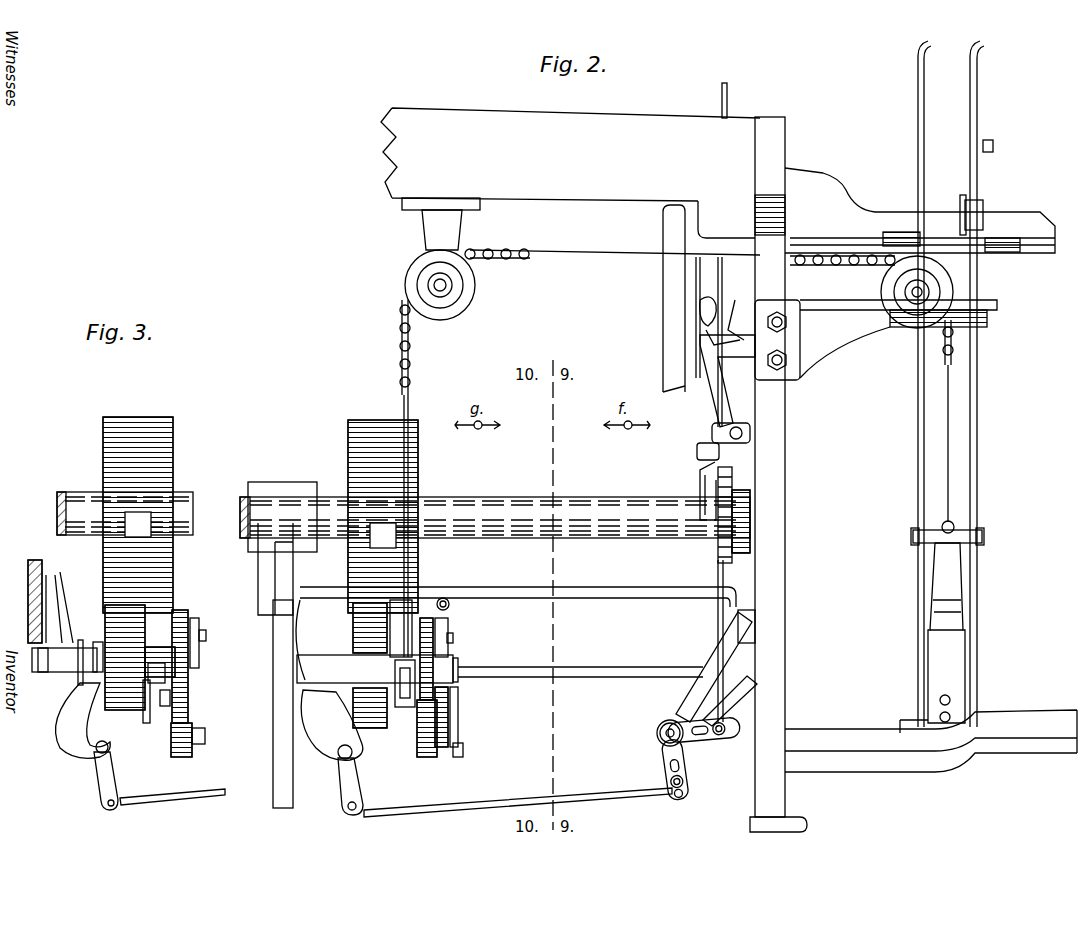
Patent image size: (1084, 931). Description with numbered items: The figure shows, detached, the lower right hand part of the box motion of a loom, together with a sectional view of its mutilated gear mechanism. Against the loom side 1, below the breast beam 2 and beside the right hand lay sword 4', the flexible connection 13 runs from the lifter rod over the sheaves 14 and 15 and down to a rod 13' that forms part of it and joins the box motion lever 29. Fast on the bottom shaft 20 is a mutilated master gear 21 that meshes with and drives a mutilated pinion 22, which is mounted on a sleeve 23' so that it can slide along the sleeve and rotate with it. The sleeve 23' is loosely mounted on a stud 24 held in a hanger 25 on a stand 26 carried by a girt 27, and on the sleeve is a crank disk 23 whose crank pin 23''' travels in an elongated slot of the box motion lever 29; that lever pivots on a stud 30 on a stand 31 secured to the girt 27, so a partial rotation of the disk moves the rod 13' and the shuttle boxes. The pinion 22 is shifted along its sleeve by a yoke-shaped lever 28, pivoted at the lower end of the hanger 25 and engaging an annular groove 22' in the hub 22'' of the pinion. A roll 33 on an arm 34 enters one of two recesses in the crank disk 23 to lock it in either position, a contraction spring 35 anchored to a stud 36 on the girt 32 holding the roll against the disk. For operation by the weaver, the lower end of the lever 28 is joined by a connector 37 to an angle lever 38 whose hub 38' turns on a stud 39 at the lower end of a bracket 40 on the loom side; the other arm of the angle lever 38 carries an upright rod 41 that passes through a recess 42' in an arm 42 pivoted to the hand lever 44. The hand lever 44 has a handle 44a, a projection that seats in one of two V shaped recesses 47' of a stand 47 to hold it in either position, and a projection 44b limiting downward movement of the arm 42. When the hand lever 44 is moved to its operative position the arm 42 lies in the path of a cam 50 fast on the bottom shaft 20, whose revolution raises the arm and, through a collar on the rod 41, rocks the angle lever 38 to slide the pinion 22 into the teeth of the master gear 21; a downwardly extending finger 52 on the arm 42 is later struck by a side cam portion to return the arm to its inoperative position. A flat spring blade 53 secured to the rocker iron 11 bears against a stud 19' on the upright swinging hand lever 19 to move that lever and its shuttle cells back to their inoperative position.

In FIG. 2, the loom side 1 is at (788, 156).
In FIG. 2, the breast beam 2 is at (392, 150).
In FIG. 2, the lay sword 4' is at (675, 316).
In FIG. 2, the rocker iron 11 is at (990, 714).
In FIG. 2, the flexible connection 13 is at (663, 355).
In FIG. 2, the rod 13' is at (429, 526).
In FIG. 2, the sheave 14 is at (896, 302).
In FIG. 2, the sheave 15 is at (404, 286).
In FIG. 2, the upright swinging hand lever 19 is at (949, 384).
In FIG. 2, the stud or bolt 19' is at (932, 555).
In FIG. 2, the bottom shaft 20 is at (242, 497).
In FIG. 3, the bottom shaft 20 is at (72, 492).
In FIG. 2, the master gear 21 is at (362, 448).
In FIG. 3, the master gear 21 is at (114, 453).
In FIG. 2, the mutilated pinion 22 is at (363, 673).
In FIG. 3, the mutilated pinion 22 is at (132, 678).
In FIG. 3, the annular groove 22' is at (86, 648).
In FIG. 3, the hub 22'' is at (91, 693).
In FIG. 2, the crank disk 23 is at (426, 682).
In FIG. 3, the crank disk 23 is at (194, 653).
In FIG. 3, the sleeve 23' is at (158, 704).
In FIG. 2, the crank pin 23''' is at (474, 631).
In FIG. 3, the crank pin 23''' is at (223, 631).
In FIG. 3, the stud 24 is at (34, 660).
In FIG. 2, the hanger or bracket 25 is at (306, 740).
In FIG. 3, the hanger or bracket 25 is at (80, 668).
In FIG. 3, the stand 26 is at (58, 614).
In FIG. 2, the girt 27 is at (276, 680).
In FIG. 3, the girt 27 is at (28, 586).
In FIG. 2, the yoke-shaped lever 28 is at (326, 702).
In FIG. 3, the yoke-shaped lever 28 is at (85, 690).
In FIG. 2, the box motion lever 29 is at (449, 628).
In FIG. 3, the box motion lever 29 is at (200, 620).
In FIG. 2, the stud 30 is at (465, 668).
In FIG. 2, the stand 31 is at (312, 660).
In FIG. 2, the girt 32 is at (577, 597).
In FIG. 2, the roll 33 is at (425, 745).
In FIG. 3, the roll 33 is at (172, 740).
In FIG. 2, the arm 34 is at (462, 756).
In FIG. 3, the arm 34 is at (205, 740).
In FIG. 2, the helically coiled contraction spring 35 is at (458, 700).
In FIG. 2, the stud 36 is at (447, 597).
In FIG. 2, the rod or connector 37 is at (505, 790).
In FIG. 3, the rod or connector 37 is at (196, 794).
In FIG. 2, the angle lever 38 is at (688, 759).
In FIG. 2, the hub 38' is at (655, 722).
In FIG. 2, the stud 39 is at (660, 735).
In FIG. 2, the bracket or support 40 is at (705, 680).
In FIG. 2, the rod or connector 41 is at (729, 100).
In FIG. 2, the arm 42 is at (695, 446).
In FIG. 2, the recess 42' is at (687, 491).
In FIG. 2, the hand lever 44 is at (716, 392).
In FIG. 2, the handle 44a is at (700, 312).
In FIG. 2, the projection 44b is at (750, 440).
In FIG. 2, the stand 47 is at (686, 360).
In FIG. 2, the V shaped recesses 47' is at (733, 309).
In FIG. 2, the cam 50 is at (734, 485).
In FIG. 2, the finger 52 is at (700, 522).
In FIG. 2, the flat spring blade 53 is at (958, 598).